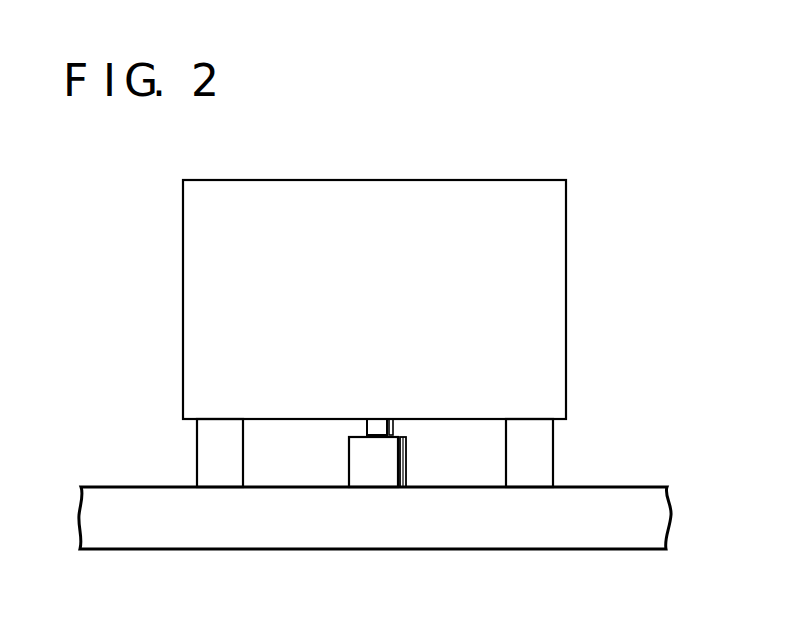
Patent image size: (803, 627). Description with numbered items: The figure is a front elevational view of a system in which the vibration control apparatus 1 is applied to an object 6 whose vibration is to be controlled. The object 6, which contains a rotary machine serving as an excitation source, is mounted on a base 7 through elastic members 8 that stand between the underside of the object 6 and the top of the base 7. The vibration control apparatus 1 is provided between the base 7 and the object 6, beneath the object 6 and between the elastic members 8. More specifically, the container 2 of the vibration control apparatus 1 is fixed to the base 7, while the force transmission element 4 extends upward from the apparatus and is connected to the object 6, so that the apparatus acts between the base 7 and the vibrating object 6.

The vibration control apparatus 1 is at (407, 476).
The container 2 is at (349, 465).
The force transmission element 4 is at (395, 432).
The object 6 is at (183, 280).
The base 7 is at (626, 488).
The elastic members 8 is at (197, 448).